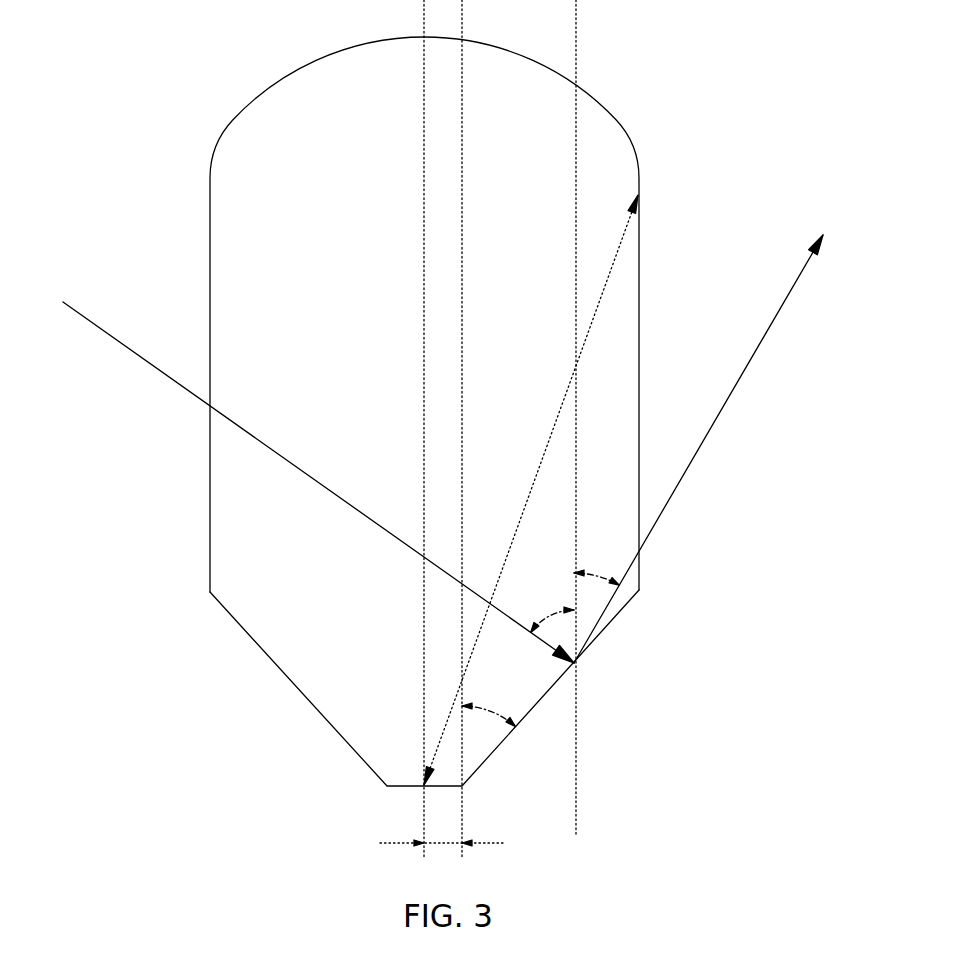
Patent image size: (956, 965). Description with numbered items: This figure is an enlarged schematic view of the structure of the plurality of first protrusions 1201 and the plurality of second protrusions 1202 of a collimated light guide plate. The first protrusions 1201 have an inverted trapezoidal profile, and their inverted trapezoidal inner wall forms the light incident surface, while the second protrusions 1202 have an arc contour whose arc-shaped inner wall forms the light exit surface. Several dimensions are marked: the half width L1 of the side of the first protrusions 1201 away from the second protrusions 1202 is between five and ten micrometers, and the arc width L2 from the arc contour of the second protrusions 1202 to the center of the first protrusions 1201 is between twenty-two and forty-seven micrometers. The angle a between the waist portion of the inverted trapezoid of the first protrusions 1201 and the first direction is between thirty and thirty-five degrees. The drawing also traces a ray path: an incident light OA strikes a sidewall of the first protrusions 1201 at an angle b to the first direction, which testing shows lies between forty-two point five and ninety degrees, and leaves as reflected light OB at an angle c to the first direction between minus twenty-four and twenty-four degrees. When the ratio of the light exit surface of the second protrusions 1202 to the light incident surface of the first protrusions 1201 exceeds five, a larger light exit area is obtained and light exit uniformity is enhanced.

The first protrusions 1201 is at (323, 667).
The second protrusions 1202 is at (330, 97).
The incident light OA is at (300, 475).
The reflected light OB is at (723, 428).
The half width L1 is at (442, 825).
The arc width L2 is at (531, 490).
The angle between waist portion and first direction a is at (488, 702).
The angle between incident light and first direction b is at (548, 603).
The angle between reflected light and first direction c is at (596, 561).